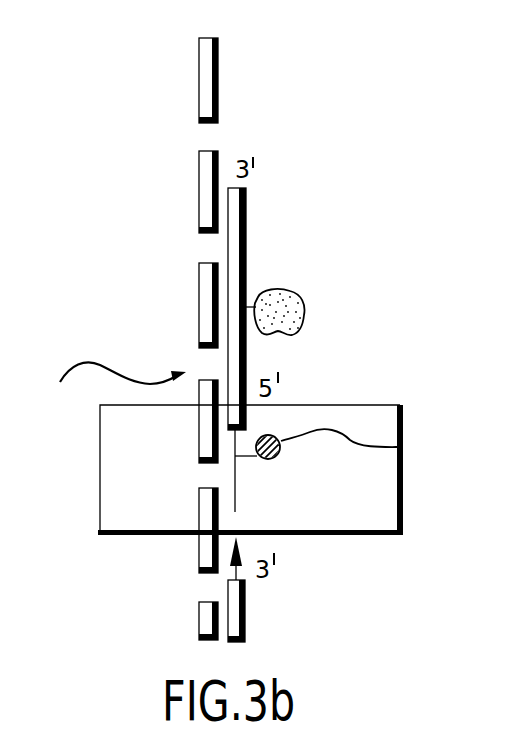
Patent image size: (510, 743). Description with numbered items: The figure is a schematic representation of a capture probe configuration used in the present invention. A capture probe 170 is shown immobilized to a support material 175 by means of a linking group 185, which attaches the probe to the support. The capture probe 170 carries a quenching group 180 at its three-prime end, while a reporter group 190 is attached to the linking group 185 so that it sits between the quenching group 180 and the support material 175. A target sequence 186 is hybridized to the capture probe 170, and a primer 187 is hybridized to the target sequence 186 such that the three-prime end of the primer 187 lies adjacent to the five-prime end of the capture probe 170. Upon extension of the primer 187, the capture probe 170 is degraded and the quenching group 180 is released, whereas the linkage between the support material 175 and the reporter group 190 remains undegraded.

The capture probe 170 is at (247, 228).
The support material 175 is at (132, 520).
The quenching group 180 is at (305, 292).
The linking group 185 is at (235, 486).
The target sequence 186 is at (104, 393).
The primer 187 is at (245, 613).
The reporter group 190 is at (400, 447).